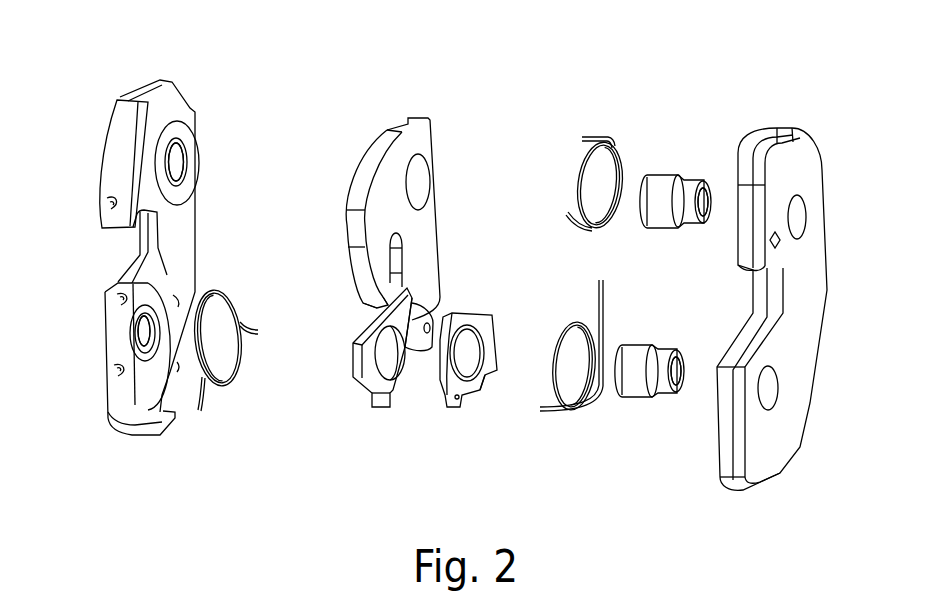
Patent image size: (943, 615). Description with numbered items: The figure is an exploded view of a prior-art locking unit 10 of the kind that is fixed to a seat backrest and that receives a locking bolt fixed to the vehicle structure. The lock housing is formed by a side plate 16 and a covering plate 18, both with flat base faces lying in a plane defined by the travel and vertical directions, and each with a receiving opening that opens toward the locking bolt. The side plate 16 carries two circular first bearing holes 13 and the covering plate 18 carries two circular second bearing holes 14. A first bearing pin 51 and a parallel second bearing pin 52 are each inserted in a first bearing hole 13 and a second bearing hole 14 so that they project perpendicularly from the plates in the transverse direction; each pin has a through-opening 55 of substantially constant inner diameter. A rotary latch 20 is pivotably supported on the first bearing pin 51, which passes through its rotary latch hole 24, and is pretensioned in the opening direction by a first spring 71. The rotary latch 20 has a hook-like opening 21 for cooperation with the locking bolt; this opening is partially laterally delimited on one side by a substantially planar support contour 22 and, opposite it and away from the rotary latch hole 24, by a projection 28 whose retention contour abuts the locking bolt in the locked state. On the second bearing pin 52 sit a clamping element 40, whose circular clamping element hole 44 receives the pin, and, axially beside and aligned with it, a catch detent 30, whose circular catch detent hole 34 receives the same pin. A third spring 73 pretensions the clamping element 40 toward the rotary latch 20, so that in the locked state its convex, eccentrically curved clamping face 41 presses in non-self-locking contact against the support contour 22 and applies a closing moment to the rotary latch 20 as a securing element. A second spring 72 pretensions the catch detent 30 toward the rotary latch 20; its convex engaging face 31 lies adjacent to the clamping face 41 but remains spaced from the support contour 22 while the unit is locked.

The locking unit 10 is at (599, 86).
The first bearing holes 13 is at (180, 163).
The second bearing holes 14 is at (800, 212).
The side plate 16 is at (178, 100).
The covering plate 18 is at (797, 150).
The rotary latch 20 is at (380, 142).
The hook-like opening 21 is at (396, 262).
The support contour 22 is at (380, 290).
The rotary latch hole 24 is at (420, 178).
The projection 28 is at (370, 283).
The catch detent 30 is at (383, 407).
The engaging face 31 is at (397, 366).
The catch detent hole 34 is at (394, 362).
The clamping element 40 is at (468, 388).
The clamping face 41 is at (500, 330).
The clamping element hole 44 is at (483, 370).
The first bearing pin 51 is at (665, 180).
The second bearing pin 52 is at (640, 350).
The through-opening 55 is at (710, 195).
The first spring 71 is at (578, 170).
The second spring 72 is at (235, 378).
The third spring 73 is at (597, 395).